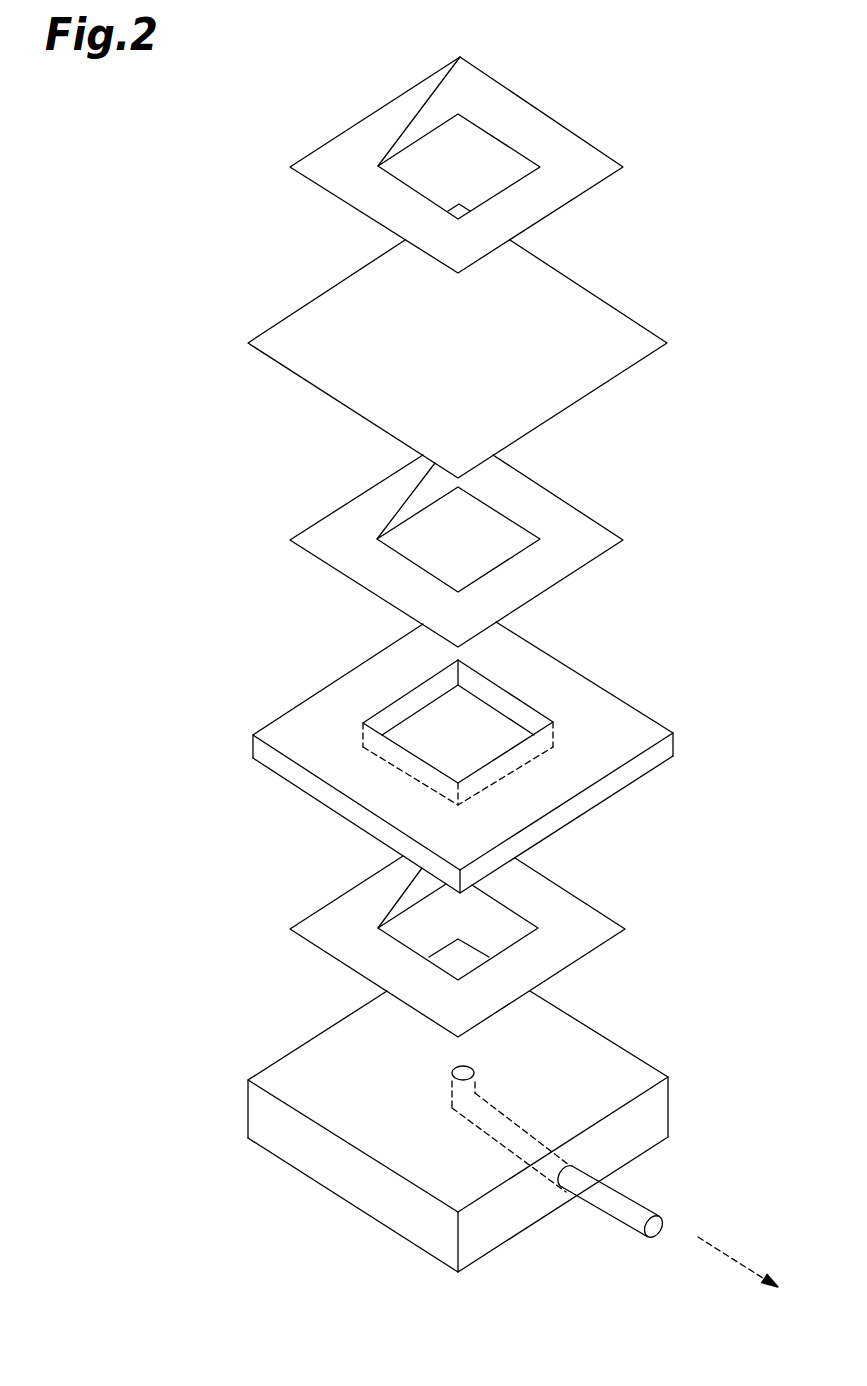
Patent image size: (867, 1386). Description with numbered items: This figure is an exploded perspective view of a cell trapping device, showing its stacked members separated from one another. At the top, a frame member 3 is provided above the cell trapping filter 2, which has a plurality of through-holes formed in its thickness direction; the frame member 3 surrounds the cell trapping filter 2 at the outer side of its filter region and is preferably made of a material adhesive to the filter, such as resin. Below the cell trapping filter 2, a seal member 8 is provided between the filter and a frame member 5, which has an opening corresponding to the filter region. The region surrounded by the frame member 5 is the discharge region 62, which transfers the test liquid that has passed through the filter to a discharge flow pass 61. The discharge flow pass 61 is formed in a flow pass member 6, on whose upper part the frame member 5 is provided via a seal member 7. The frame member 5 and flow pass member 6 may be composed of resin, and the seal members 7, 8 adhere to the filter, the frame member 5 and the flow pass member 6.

The cell trapping filter 2 is at (618, 305).
The frame member 3 is at (577, 132).
The frame member 5 is at (467, 751).
The flow pass member 6 is at (513, 1136).
The seal member 7 is at (607, 898).
The seal member 8 is at (595, 510).
The discharge flow pass 61 is at (655, 1202).
The discharge region 62 is at (503, 752).